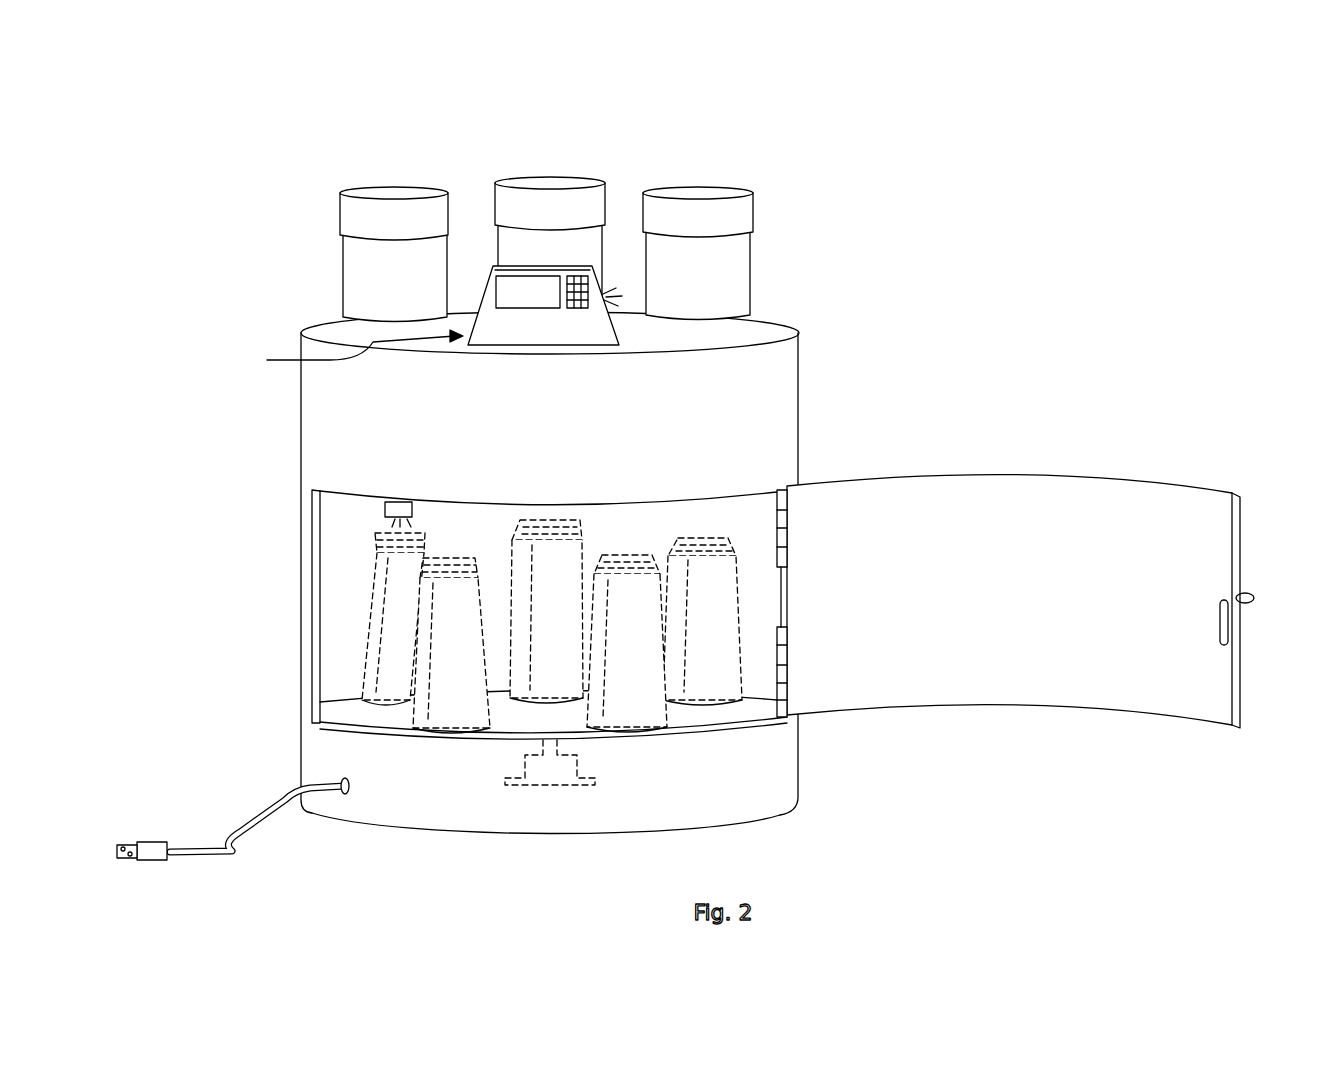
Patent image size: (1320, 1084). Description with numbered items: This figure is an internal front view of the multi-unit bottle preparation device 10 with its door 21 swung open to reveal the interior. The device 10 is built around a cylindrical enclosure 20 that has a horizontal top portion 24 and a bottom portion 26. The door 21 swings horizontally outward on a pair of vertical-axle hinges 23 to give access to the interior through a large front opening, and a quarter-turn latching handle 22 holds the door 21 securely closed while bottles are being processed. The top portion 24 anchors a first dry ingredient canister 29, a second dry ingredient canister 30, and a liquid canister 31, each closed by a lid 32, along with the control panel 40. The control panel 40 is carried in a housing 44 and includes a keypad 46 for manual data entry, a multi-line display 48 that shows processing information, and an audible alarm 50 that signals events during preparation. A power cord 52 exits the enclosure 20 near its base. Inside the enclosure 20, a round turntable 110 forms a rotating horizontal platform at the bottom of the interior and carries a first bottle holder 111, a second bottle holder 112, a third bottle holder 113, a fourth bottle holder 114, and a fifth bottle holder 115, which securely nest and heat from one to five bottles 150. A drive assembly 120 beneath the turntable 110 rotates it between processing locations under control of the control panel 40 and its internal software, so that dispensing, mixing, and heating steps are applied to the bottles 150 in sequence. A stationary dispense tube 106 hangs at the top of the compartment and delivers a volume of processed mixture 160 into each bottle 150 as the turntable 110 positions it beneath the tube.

The multi-unit bottle preparation device 10 is at (992, 181).
The enclosure 20 is at (800, 405).
The door 21 is at (1041, 565).
The latching handle 22 is at (1245, 603).
The hinge 23 is at (787, 657).
The top portion 24 is at (776, 330).
The bottom portion 26 is at (790, 834).
The first dry ingredient canister 29 is at (352, 250).
The second dry ingredient canister 30 is at (508, 242).
The liquid canister 31 is at (740, 252).
The lid 32 is at (545, 185).
The control panel 40 is at (349, 351).
The housing 44 is at (559, 348).
The keypad 46 is at (577, 305).
The display 48 is at (532, 298).
The alarm 50 is at (618, 300).
The power cord 52 is at (222, 825).
The dispense tube 106 is at (400, 505).
The turntable 110 is at (320, 727).
The first bottle holder 111 is at (447, 735).
The second bottle holder 112 is at (390, 700).
The third bottle holder 113 is at (540, 690).
The fourth bottle holder 114 is at (634, 727).
The fifth bottle holder 115 is at (710, 700).
The drive assembly 120 is at (520, 790).
The bottle 150 is at (498, 618).
The mixture 160 is at (417, 560).